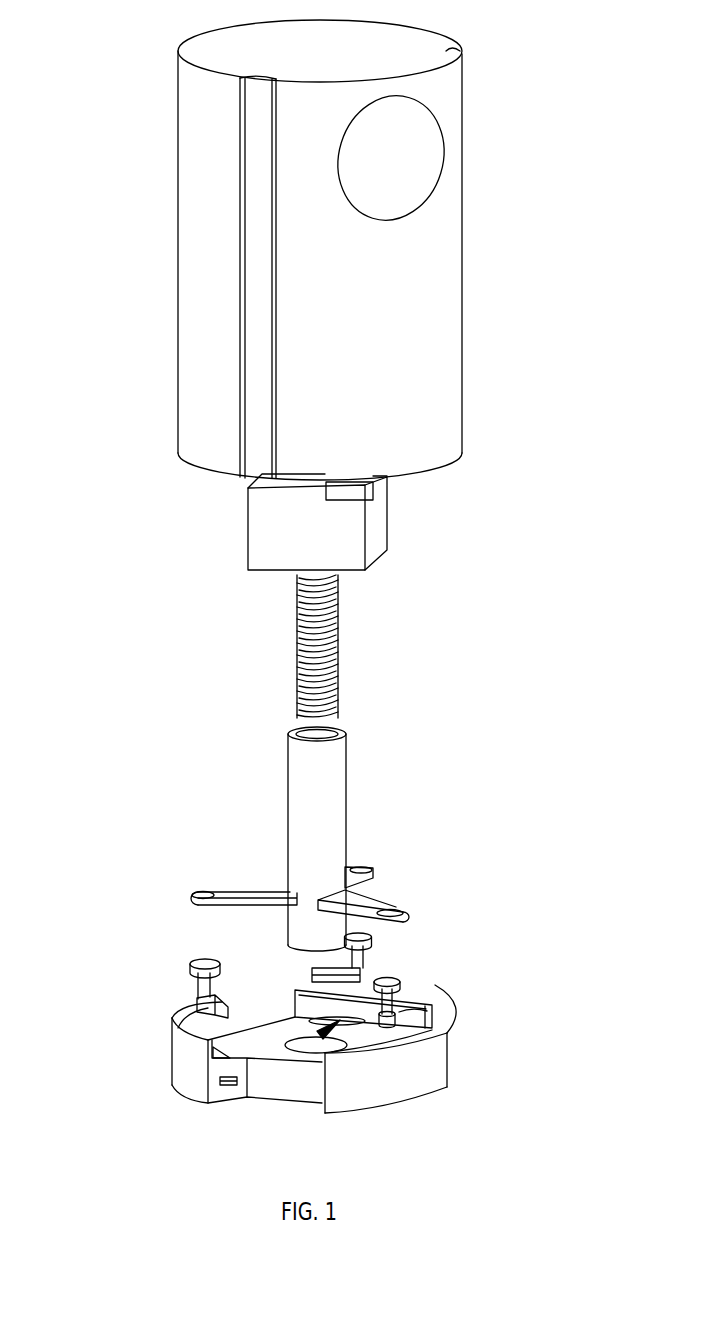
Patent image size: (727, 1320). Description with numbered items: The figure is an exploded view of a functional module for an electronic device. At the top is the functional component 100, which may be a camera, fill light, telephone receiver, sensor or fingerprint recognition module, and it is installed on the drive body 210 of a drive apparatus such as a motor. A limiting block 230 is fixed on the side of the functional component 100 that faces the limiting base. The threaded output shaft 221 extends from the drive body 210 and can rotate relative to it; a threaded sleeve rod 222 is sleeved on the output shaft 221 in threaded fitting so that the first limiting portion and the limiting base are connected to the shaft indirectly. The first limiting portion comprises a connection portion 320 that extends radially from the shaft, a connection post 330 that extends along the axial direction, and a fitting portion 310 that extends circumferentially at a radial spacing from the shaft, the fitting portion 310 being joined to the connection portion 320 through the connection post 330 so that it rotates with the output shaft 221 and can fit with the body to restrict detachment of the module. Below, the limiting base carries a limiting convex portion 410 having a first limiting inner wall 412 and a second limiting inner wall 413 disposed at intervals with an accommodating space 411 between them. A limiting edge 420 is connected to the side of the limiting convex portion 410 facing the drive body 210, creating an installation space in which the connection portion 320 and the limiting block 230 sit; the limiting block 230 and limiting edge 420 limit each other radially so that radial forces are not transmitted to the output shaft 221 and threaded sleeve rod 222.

The functional component 100 is at (405, 348).
The drive body 210 is at (307, 545).
The limiting block 230 is at (350, 493).
The output shaft 221 is at (297, 705).
The threaded sleeve rod 222 is at (303, 795).
The connection portion 320 is at (288, 890).
The second limiting inner wall 413 is at (301, 1025).
The limiting edge 420 is at (356, 1006).
The fitting portion 310 is at (393, 1023).
The connection post 330 is at (197, 981).
The limiting convex portion 410 is at (395, 1098).
The first limiting inner wall 412 is at (220, 1080).
The accommodating space 411 is at (338, 1021).